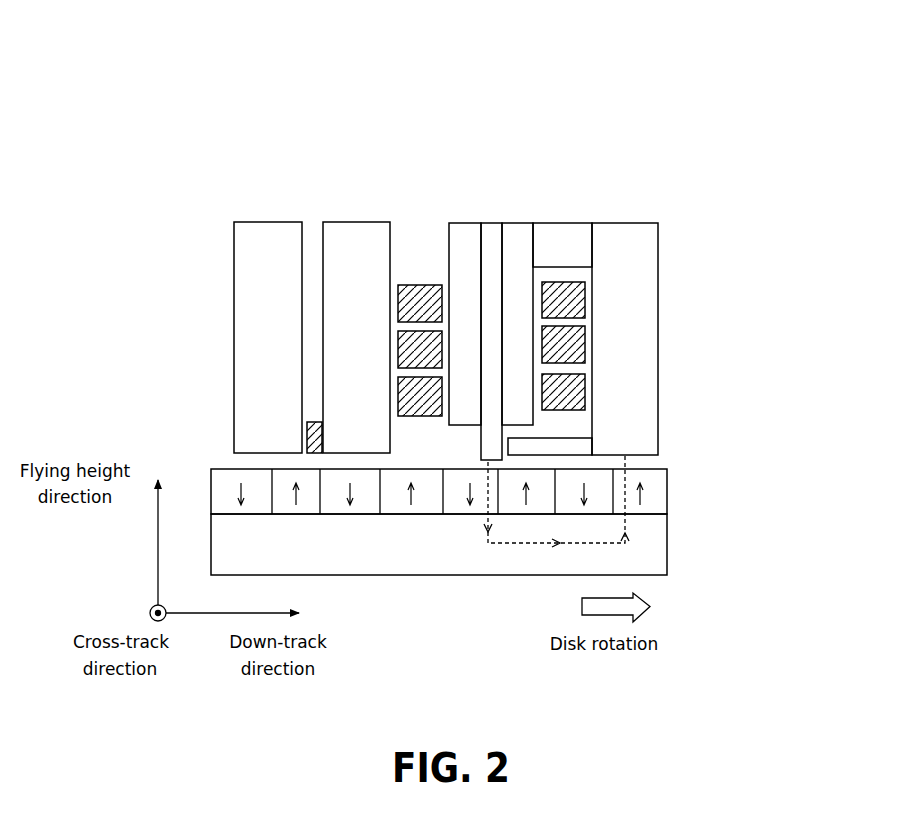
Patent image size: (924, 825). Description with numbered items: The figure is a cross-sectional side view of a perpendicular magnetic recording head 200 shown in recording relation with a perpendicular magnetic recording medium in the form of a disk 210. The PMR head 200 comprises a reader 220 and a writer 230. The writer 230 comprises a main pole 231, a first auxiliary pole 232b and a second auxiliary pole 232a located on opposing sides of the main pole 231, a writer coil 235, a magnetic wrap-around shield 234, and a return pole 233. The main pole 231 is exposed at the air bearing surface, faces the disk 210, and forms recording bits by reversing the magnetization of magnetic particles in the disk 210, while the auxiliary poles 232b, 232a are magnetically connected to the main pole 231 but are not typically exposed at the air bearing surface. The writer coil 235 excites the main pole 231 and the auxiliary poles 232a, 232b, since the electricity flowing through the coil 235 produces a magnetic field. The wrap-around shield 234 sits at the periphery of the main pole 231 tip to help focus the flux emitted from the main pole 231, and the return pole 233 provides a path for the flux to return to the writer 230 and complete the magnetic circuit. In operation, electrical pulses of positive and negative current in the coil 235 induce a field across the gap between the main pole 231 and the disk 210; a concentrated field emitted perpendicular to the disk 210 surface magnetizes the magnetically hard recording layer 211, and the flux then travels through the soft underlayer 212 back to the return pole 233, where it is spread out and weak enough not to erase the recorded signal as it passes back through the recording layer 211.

The PMR head 200 is at (158, 98).
The disk 210 is at (710, 480).
The recording layer 211 is at (658, 492).
The soft underlayer 212 is at (653, 543).
The reader 220 is at (390, 148).
The writer 230 is at (657, 148).
The main pole 231 is at (488, 232).
The second auxiliary pole 232a is at (517, 242).
The first auxiliary pole 232b is at (467, 232).
The return pole 233 is at (628, 242).
The magnetic wrap-around shield 234 is at (570, 447).
The writer coil 235 is at (423, 308).